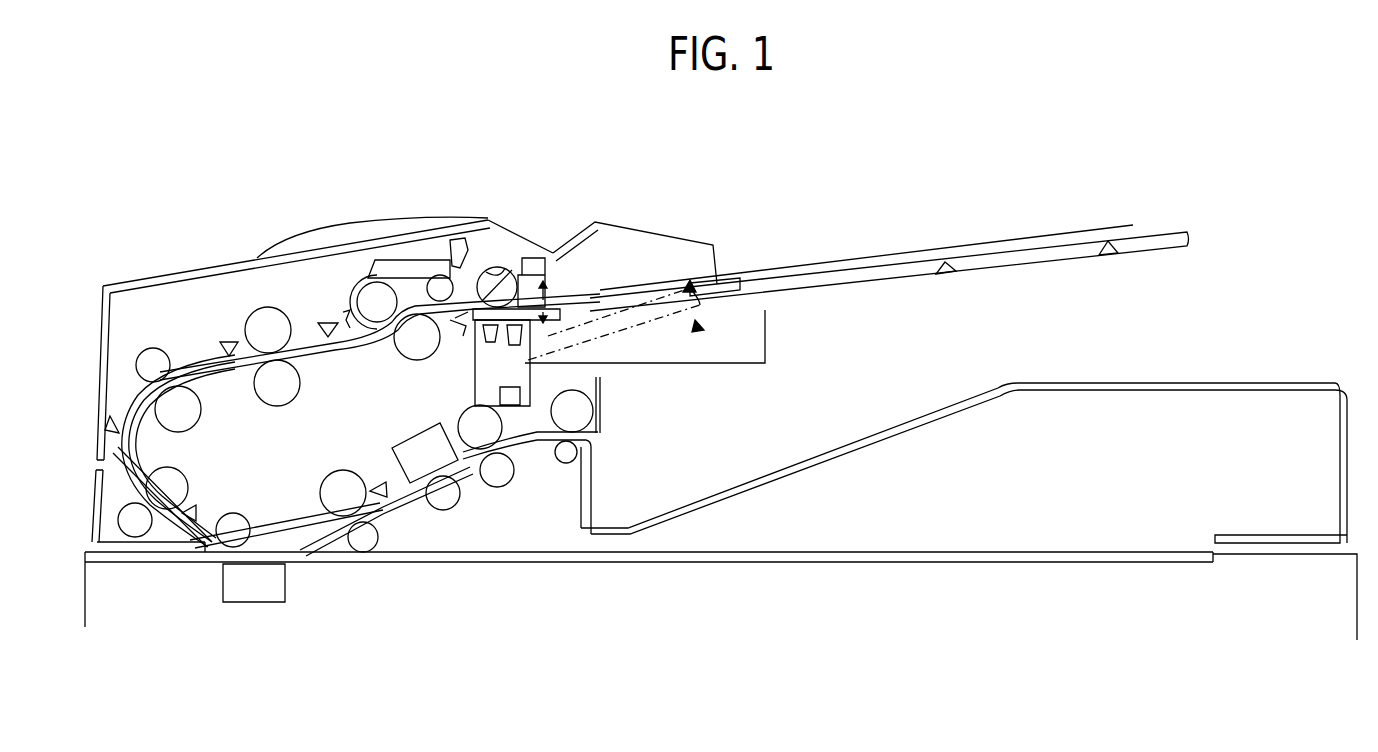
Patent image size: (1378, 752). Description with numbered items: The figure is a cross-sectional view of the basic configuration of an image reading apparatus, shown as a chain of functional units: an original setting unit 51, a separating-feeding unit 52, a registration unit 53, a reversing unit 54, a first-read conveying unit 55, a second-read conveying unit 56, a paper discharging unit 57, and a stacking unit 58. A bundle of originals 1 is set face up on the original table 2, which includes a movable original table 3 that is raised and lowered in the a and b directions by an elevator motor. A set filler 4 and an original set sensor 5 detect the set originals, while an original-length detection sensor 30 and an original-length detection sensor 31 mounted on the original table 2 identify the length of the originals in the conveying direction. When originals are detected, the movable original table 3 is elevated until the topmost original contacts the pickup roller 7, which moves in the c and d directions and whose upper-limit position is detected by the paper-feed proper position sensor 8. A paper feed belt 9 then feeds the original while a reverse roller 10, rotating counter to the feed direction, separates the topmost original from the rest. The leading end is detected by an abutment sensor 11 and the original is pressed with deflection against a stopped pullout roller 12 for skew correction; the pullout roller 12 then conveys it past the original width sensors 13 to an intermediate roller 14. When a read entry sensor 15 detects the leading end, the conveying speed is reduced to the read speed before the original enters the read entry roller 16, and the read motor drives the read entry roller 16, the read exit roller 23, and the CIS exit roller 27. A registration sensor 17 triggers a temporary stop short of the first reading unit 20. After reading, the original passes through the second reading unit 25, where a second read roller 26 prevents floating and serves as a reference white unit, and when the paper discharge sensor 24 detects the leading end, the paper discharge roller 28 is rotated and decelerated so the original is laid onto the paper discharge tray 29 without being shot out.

The bundle of originals 1 is at (1022, 232).
The original table 2 is at (845, 288).
The movable original table 3 is at (640, 300).
The set filler 4 is at (520, 255).
The original set sensor 5 is at (544, 358).
The pickup roller 7 is at (486, 272).
The paper-feed proper position sensor 8 is at (455, 252).
The paper feed belt 9 is at (412, 282).
The reverse roller 10 is at (414, 356).
The abutment sensor 11 is at (325, 322).
The pullout roller 12 is at (312, 368).
The original width sensors 13 is at (229, 340).
The intermediate roller 14 is at (205, 410).
The read entry sensor 15 is at (114, 418).
The read entry roller 16 is at (170, 470).
The registration sensor 17 is at (198, 510).
The first reading unit 20 is at (255, 602).
The read exit roller 23 is at (338, 478).
The paper discharge sensor 24 is at (380, 484).
The second reading unit 25 is at (400, 505).
The second read roller 26 is at (460, 512).
The CIS exit roller 27 is at (477, 455).
The paper discharge roller 28 is at (592, 438).
The paper discharge tray 29 is at (678, 503).
The original-length detection sensor 30 is at (948, 282).
The original-length detection sensor 31 is at (1112, 262).
The original setting unit 51 is at (742, 176).
The separating-feeding unit 52 is at (446, 352).
The registration unit 53 is at (258, 296).
The reversing unit 54 is at (158, 332).
The first-read conveying unit 55 is at (268, 514).
The second-read conveying unit 56 is at (385, 430).
The paper discharging unit 57 is at (546, 450).
The stacking unit 58 is at (778, 458).